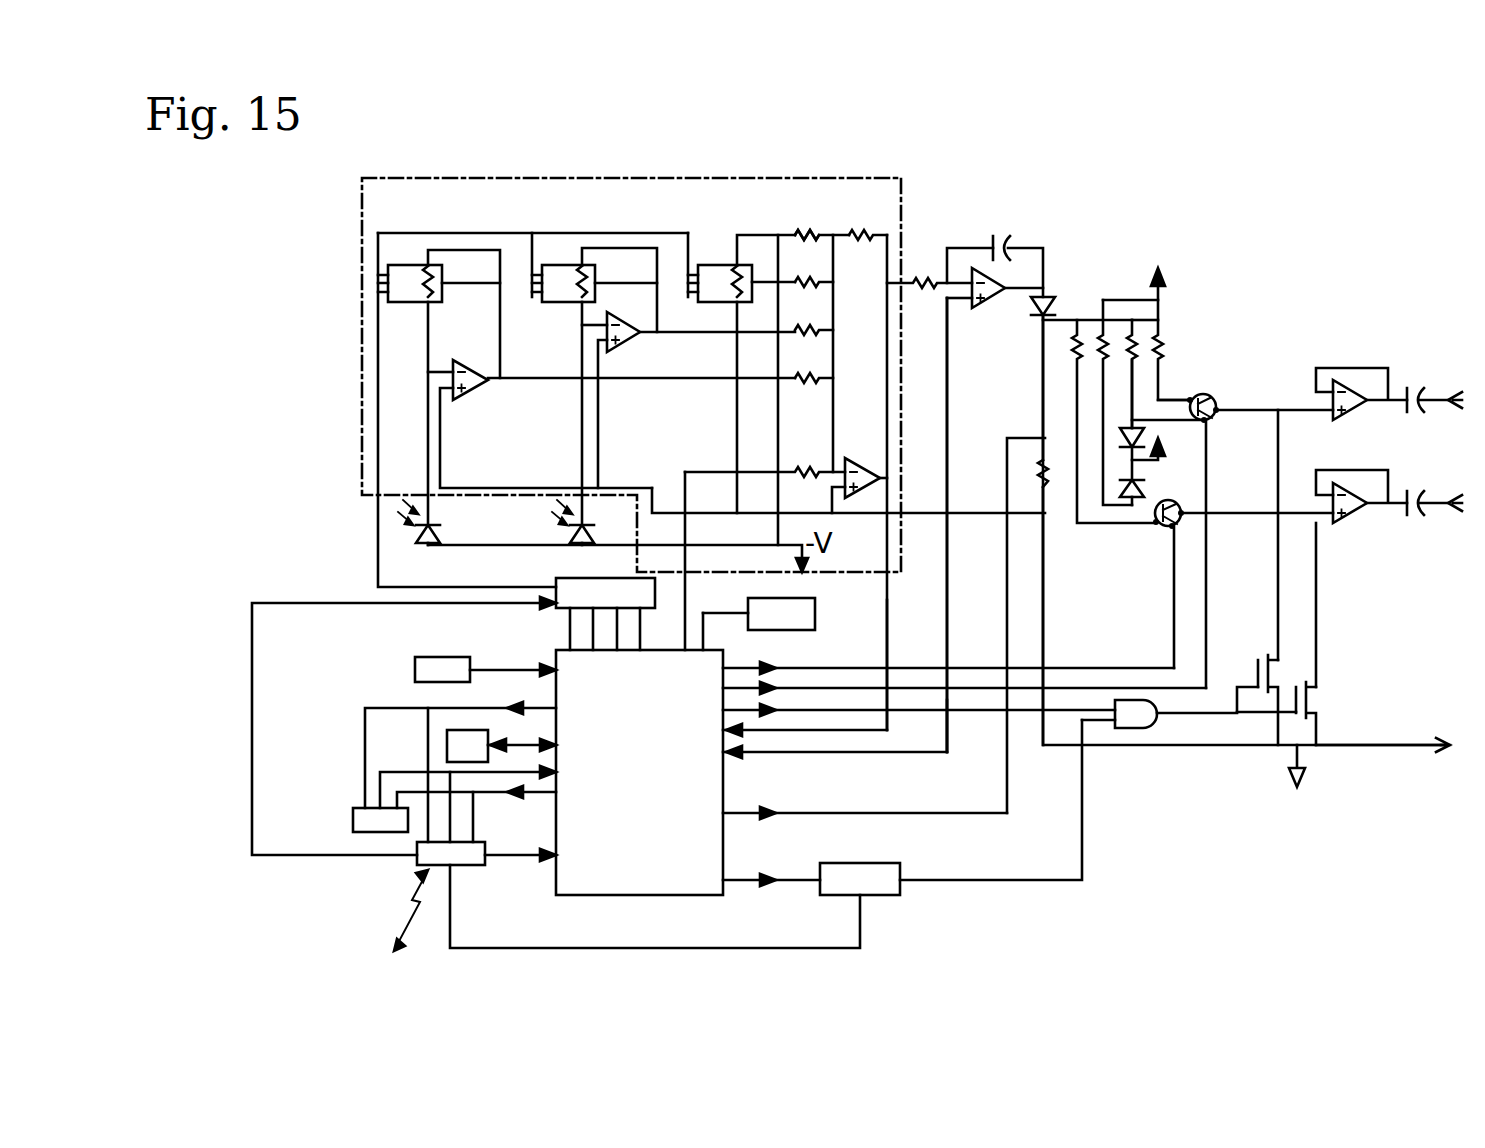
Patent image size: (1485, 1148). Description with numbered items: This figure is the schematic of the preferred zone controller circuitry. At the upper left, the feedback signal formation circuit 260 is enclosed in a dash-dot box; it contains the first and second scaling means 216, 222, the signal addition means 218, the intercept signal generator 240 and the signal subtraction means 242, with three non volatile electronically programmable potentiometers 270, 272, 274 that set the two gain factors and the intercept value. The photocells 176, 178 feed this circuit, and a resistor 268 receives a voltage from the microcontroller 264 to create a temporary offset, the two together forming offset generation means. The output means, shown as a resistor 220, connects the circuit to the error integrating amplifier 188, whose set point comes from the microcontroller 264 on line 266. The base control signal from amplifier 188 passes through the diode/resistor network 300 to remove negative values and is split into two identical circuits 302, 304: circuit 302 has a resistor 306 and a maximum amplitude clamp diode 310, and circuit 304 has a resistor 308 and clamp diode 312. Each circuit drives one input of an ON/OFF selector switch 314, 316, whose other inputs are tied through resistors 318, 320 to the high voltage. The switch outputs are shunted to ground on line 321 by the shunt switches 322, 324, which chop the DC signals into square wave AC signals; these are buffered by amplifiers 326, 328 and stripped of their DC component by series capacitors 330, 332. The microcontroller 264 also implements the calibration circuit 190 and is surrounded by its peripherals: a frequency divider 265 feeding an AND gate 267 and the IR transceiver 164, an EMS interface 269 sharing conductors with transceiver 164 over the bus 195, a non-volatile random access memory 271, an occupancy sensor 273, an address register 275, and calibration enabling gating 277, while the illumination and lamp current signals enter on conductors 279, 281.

The IR transceiver 164 is at (417, 856).
The photocell 176 is at (420, 538).
The photocell 178 is at (570, 535).
The error integrating amplifier 188 is at (1058, 251).
The calibration circuit 190 is at (438, 633).
The communication bus 195 is at (252, 735).
The first scaling means 216 is at (420, 380).
The signal addition means 218 is at (876, 219).
The output means 220 is at (918, 272).
The second scaling means 222 is at (557, 322).
The intercept signal generator 240 is at (790, 212).
The signal subtraction means 242 is at (834, 220).
The signal formation circuit 260 is at (902, 197).
The microcontroller 264 is at (690, 897).
The frequency divider 265 is at (878, 897).
The line 266 is at (948, 433).
The AND gate 267 is at (1142, 728).
The resistor 268 is at (807, 468).
The EMS interface 269 is at (353, 820).
The non volatile electronically programmable potentiometer 270 is at (410, 265).
The non-volatile random access memory 271 is at (447, 745).
The non volatile electronically programmable potentiometer 272 is at (562, 265).
The occupancy sensor 273 is at (415, 668).
The non volatile electronically programmable potentiometer 274 is at (712, 265).
The register 275 is at (815, 613).
The calibration enabling gating 277 is at (556, 590).
The conductor 279 is at (887, 635).
The conductor 281 is at (968, 752).
The diode/resistor network 300 is at (1207, 312).
The circuit 302 is at (1170, 381).
The circuit 304 is at (1089, 534).
The resistor 306 is at (1136, 340).
The resistor 308 is at (1077, 345).
The maximum amplitude clamp diode 310 is at (1150, 440).
The clamp diode 312 is at (1118, 490).
The ON/OFF selector switch 314 is at (1214, 396).
The ON/OFF selector switch 316 is at (1180, 527).
The resistor 318 is at (1165, 347).
The resistor 320 is at (1082, 338).
The ground line 321 is at (1348, 748).
The shunt switch 322 is at (1256, 666).
The shunt switch 324 is at (1318, 703).
The amplifier 326 is at (1352, 415).
The amplifier 328 is at (1352, 518).
The series capacitor 330 is at (1420, 395).
The series capacitor 332 is at (1420, 497).